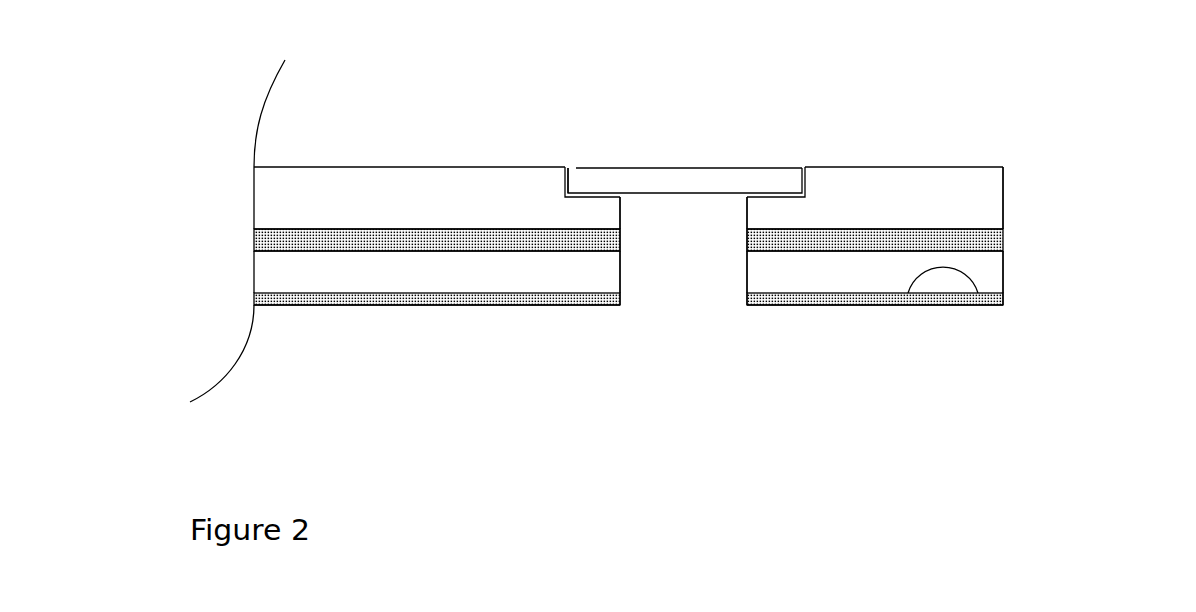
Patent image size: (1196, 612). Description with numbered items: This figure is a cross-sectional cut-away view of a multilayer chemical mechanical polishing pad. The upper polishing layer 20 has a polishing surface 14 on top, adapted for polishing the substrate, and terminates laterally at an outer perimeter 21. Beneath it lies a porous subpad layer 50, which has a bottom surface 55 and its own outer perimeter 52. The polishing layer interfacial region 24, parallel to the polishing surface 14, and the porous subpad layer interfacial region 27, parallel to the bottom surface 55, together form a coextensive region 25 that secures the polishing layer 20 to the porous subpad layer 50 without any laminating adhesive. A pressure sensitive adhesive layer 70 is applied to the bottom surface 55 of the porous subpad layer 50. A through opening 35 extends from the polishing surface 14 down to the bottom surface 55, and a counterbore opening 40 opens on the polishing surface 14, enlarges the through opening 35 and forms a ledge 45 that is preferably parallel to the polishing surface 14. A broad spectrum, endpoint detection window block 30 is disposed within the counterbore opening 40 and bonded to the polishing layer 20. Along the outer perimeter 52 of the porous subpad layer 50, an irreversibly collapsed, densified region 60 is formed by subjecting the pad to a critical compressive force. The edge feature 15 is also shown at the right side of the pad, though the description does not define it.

The polishing surface 14 is at (393, 167).
The edge 15 is at (1004, 165).
The polishing layer 20 is at (453, 198).
The outer perimeter 21 is at (1004, 188).
The polishing layer interfacial region 24 is at (478, 240).
The coextensive region 25 is at (523, 238).
The porous subpad layer interfacial region 27 is at (920, 240).
The broad spectrum, endpoint detection window block 30 is at (677, 180).
The through opening 35 is at (693, 248).
The counterbore opening 40 is at (570, 172).
The ledge 45 is at (773, 195).
The porous subpad layer 50 is at (405, 265).
The outer perimeter 52 is at (1005, 275).
The bottom surface 55 is at (427, 294).
The irreversibly collapsed, densified region 60 is at (940, 280).
The pressure sensitive adhesive layer 70 is at (557, 298).